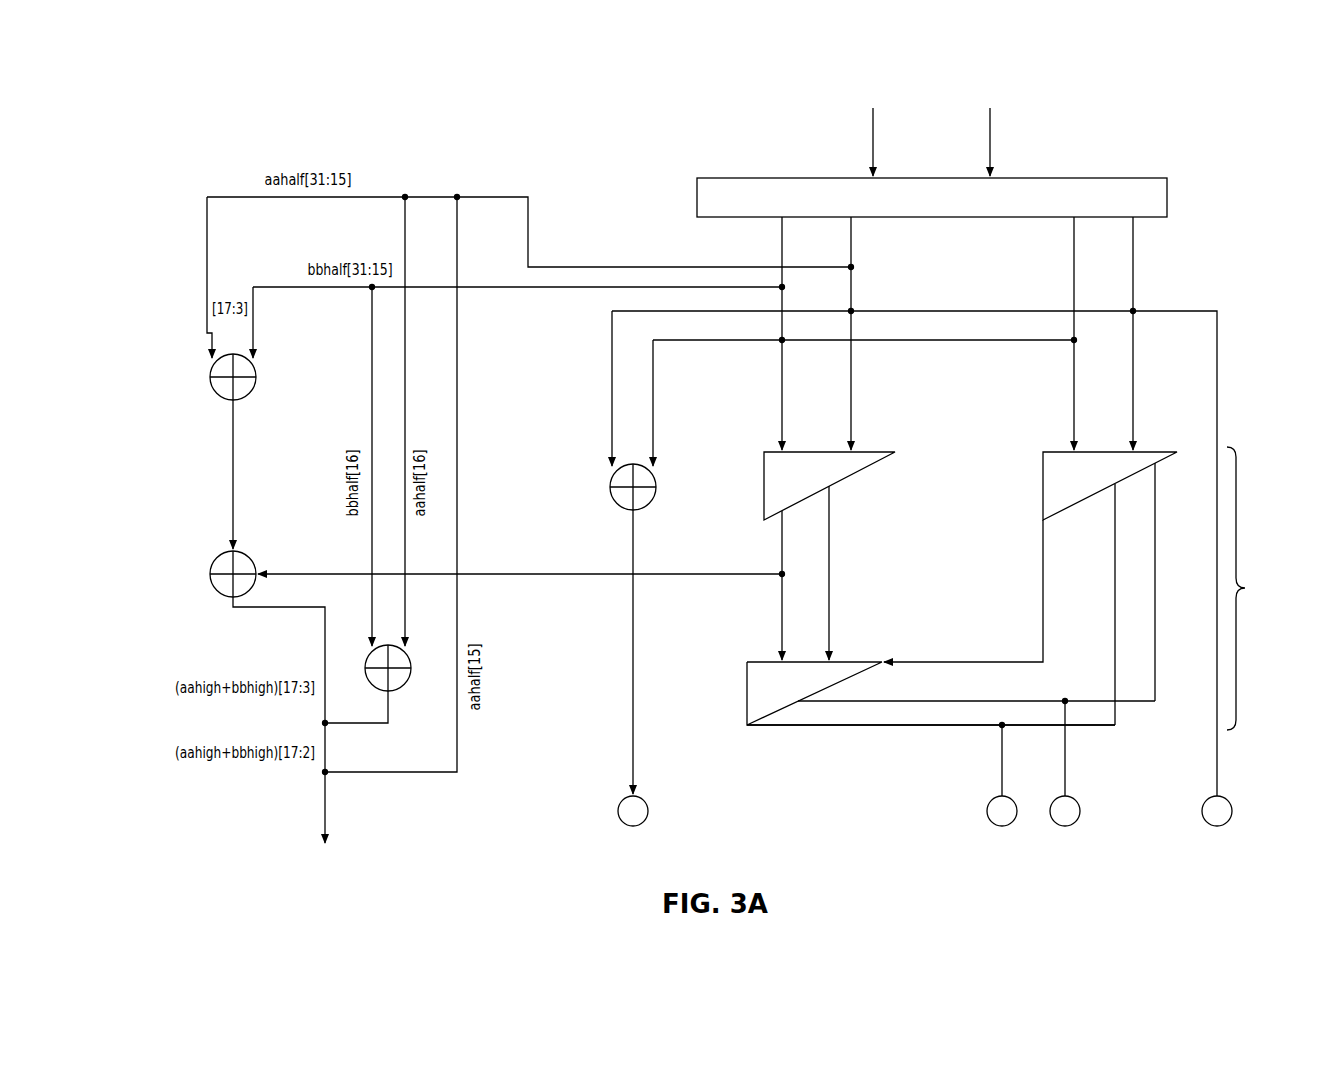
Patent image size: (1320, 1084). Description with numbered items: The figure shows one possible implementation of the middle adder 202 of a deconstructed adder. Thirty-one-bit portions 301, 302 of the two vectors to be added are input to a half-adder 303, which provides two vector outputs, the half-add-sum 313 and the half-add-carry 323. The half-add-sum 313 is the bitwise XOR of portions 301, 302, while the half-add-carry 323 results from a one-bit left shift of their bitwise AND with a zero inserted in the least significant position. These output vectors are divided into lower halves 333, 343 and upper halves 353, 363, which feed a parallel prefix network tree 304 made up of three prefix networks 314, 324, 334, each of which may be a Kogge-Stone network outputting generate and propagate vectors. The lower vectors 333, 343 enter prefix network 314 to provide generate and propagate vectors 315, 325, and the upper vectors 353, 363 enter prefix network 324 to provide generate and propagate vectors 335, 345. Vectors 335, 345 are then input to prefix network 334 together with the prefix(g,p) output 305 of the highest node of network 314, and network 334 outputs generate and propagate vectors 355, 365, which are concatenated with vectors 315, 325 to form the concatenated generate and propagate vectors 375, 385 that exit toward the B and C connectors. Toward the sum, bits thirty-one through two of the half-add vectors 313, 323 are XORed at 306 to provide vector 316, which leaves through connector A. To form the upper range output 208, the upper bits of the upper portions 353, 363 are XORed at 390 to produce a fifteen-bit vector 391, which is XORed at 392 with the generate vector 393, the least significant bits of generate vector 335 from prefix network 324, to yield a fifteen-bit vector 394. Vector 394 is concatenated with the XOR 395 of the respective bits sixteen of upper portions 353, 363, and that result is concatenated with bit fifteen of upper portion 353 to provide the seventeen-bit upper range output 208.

The middle adder 202 is at (226, 156).
The 31-bit portion of vector 301 is at (995, 142).
The 31-bit portion of vector 302 is at (870, 141).
The half-adder 303 is at (761, 177).
The upper half of half-add output vector 363 is at (780, 254).
The upper half of half-add output vector 353 is at (853, 287).
The lower half of half-add output vector 343 is at (1072, 254).
The lower half of half-add output vector 333 is at (1135, 290).
The half-add-sum vector 313 is at (1000, 311).
The half-add-carry vector 323 is at (1000, 340).
The XOR 390 is at (210, 386).
The 15-bit vector 391 is at (232, 458).
The XOR 392 is at (210, 584).
The 15-bit vector 394 is at (325, 630).
The XOR 395 is at (404, 688).
The upper range output 208 is at (328, 800).
The XOR 306 is at (610, 480).
The vector 316 is at (632, 551).
The generate vector 393 is at (618, 578).
The prefix network 324 is at (762, 487).
The propagate vector 345 is at (832, 525).
The generate vector 335 is at (780, 553).
The prefix network 334 is at (745, 682).
The prefix network 314 is at (1041, 487).
The prefix(g,p) output 305 is at (1042, 575).
The generate vector 315 is at (1113, 672).
The propagate vector 325 is at (1157, 675).
The propagate vector 365 is at (988, 701).
The generate vector 355 is at (778, 728).
The concatenated generate vector 375 is at (1005, 772).
The concatenated propagate vector 385 is at (1067, 770).
The parallel prefix network tree 304 is at (1257, 588).